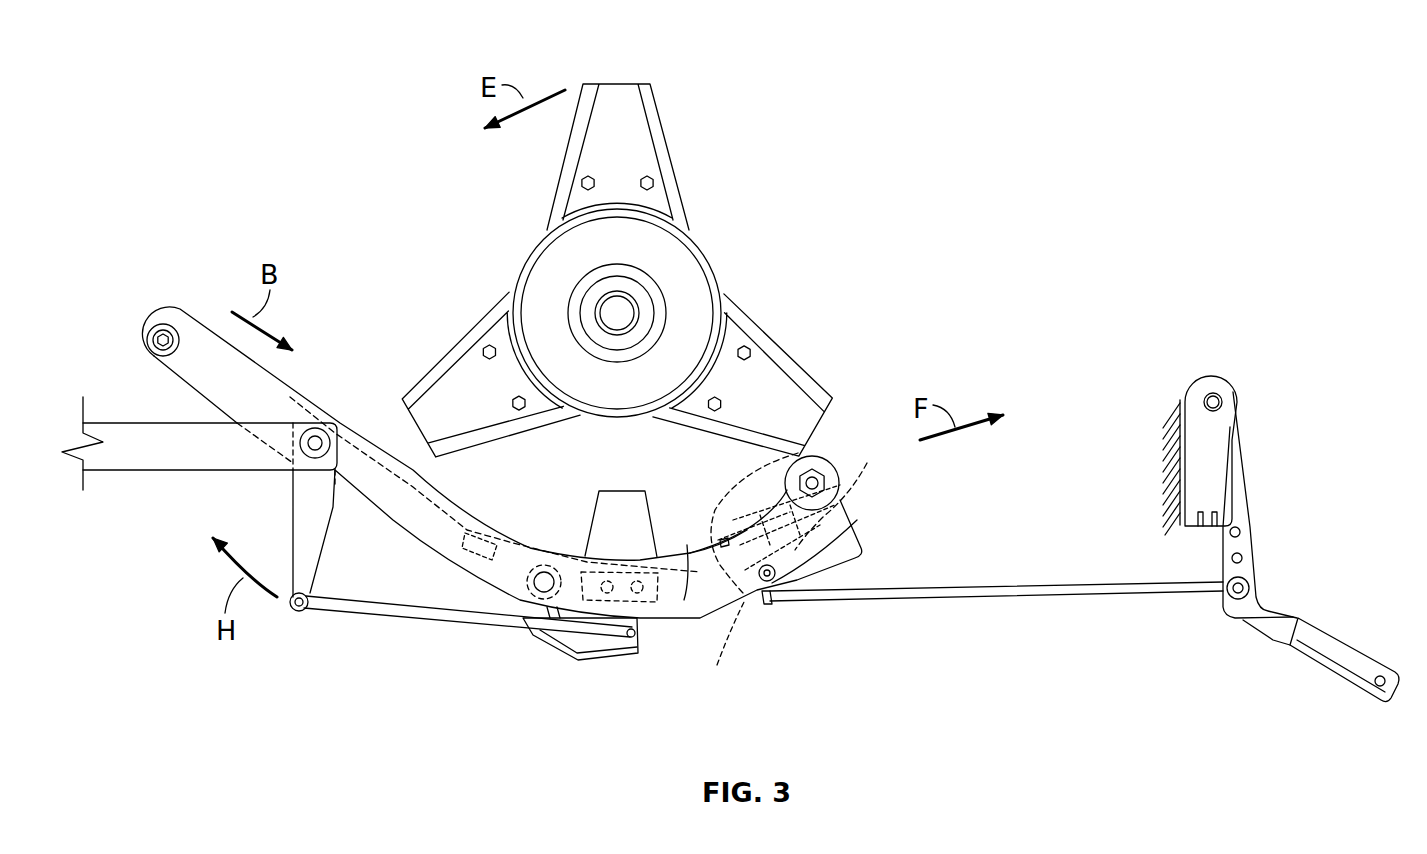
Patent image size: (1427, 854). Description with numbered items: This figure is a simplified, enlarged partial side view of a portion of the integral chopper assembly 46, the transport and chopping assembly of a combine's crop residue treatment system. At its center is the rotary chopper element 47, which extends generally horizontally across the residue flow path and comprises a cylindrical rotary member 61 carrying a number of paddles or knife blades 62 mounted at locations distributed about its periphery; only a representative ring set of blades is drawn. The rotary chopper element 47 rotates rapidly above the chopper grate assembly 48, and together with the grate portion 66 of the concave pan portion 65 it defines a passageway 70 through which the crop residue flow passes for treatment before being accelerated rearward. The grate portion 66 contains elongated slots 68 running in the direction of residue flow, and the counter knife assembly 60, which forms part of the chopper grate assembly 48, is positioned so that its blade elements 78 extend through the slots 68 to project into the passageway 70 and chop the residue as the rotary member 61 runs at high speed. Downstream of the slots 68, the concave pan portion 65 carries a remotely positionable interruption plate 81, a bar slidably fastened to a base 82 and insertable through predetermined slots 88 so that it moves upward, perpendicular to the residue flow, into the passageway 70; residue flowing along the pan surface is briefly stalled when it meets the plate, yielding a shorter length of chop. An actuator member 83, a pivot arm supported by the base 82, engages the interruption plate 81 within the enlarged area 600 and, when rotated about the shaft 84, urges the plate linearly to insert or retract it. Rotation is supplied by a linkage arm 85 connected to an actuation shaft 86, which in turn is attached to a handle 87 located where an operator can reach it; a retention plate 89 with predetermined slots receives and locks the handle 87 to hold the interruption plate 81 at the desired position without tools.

The integral chopper assembly 46 is at (955, 196).
The rotary chopper element 47 is at (693, 55).
The chopper grate assembly 48 is at (897, 502).
The counter knife assembly 60 is at (528, 622).
The rotary member 61 is at (680, 262).
The knife blades 62 is at (631, 117).
The concave pan portion 65 is at (765, 605).
The grate portion 66 is at (747, 533).
The slots 68 is at (668, 560).
The passageway 70 is at (554, 510).
The blade elements 78 is at (625, 492).
The interruption plate 81 is at (722, 651).
The base 82 is at (815, 457).
The actuator member 83 is at (758, 605).
The shaft 84 is at (857, 520).
The linkage arm 85 is at (771, 602).
The actuation shaft 86 is at (960, 603).
The handle 87 is at (1332, 648).
The slots 88 is at (687, 545).
The retention plate 89 is at (1228, 425).
The enlarged area 600 is at (858, 478).